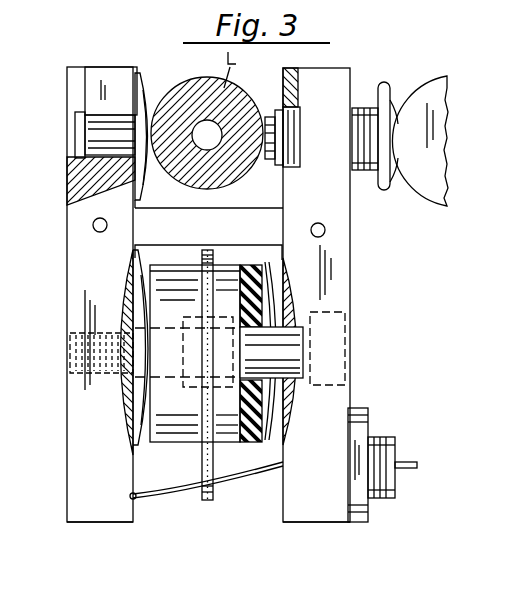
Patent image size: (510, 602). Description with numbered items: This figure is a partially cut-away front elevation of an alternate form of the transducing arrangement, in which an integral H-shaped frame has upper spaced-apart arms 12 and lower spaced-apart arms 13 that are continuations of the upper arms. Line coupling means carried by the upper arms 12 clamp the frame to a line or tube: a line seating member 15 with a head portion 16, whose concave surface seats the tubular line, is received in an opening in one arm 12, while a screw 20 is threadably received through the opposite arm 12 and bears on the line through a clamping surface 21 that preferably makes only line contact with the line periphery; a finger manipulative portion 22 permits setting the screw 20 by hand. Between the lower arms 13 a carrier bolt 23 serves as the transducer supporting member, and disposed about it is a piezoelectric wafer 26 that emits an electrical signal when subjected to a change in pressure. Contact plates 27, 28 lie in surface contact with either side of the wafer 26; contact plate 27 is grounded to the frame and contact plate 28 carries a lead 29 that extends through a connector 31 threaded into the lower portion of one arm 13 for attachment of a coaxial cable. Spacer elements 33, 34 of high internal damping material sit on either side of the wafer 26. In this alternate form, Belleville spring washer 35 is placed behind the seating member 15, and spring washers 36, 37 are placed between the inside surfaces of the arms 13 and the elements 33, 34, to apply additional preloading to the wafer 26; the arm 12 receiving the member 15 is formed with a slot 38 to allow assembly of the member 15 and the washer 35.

The upper spaced-apart arms 12 is at (80, 200).
The lower spaced-apart arms 13 is at (78, 430).
The line seating member 15 is at (120, 150).
The head portion 16 is at (209, 130).
The screw 20 is at (364, 110).
The clamping surface 21 is at (266, 156).
The finger manipulative portion 22 is at (423, 135).
The carrier bolt 23 is at (293, 352).
The piezoelectric wafer 26 is at (203, 405).
The contact plate 27 is at (198, 465).
The contact plate 28 is at (212, 460).
The lead 29 is at (257, 470).
The connector 31 is at (380, 446).
The spacer element 33 is at (160, 396).
The spacer element 34 is at (258, 423).
The spring washer 35 is at (148, 97).
The spring washer 36 is at (160, 262).
The spring washer 37 is at (278, 260).
The slot 38 is at (111, 82).